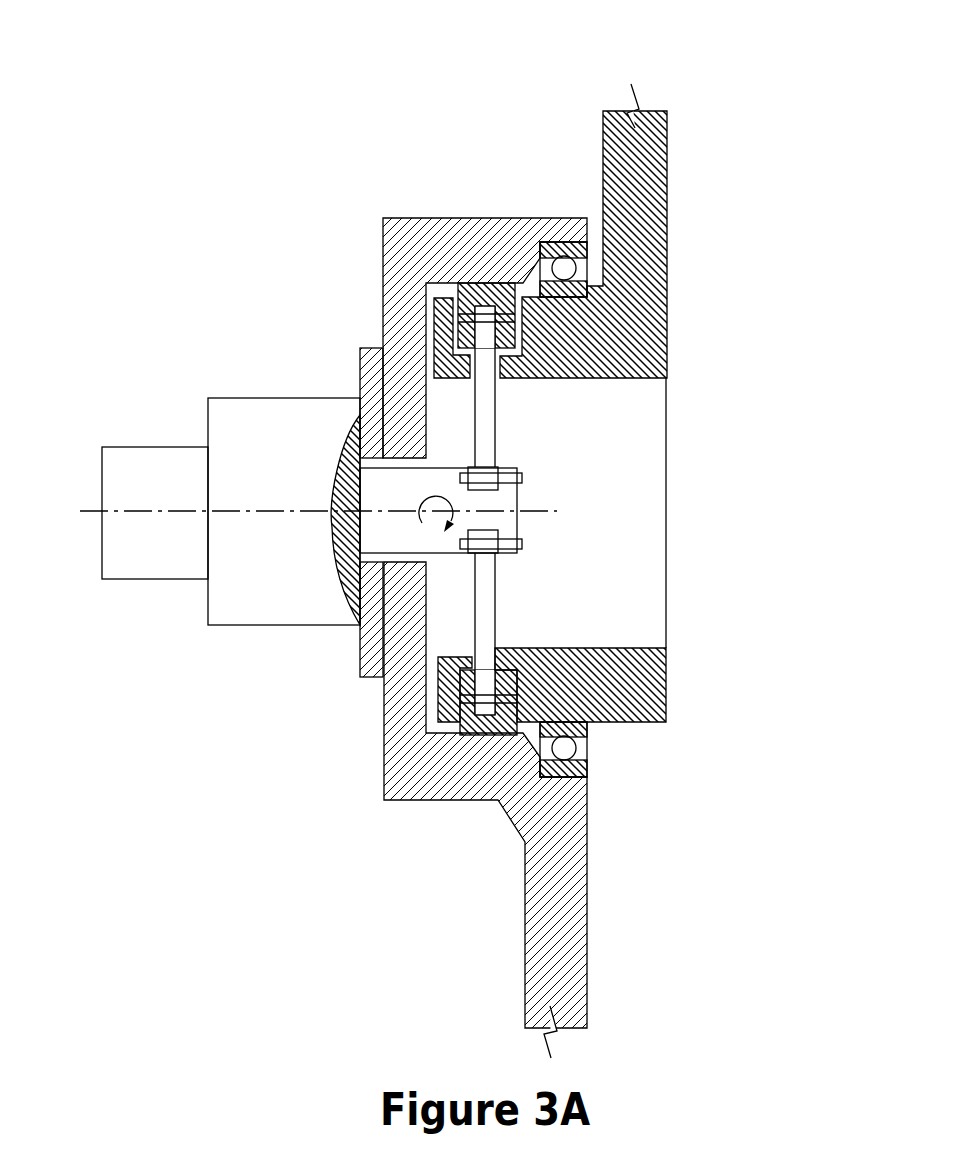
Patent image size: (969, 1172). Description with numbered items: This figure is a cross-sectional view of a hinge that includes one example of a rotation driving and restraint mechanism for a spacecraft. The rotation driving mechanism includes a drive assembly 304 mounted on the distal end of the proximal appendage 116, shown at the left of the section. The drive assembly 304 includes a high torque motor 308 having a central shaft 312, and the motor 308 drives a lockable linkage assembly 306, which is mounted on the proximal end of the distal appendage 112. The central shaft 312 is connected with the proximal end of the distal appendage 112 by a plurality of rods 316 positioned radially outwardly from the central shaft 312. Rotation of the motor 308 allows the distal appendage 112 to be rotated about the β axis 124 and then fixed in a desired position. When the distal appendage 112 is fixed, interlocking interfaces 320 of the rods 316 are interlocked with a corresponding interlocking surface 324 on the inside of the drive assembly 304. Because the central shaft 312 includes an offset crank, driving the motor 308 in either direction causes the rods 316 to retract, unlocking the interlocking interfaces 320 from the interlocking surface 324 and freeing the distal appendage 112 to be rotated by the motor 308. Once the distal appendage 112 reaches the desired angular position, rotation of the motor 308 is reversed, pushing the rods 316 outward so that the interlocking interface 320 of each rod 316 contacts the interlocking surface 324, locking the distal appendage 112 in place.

The distal appendage 112 is at (642, 111).
The proximal appendage 116 is at (558, 1020).
The β axis 124 is at (80, 511).
The drive assembly 304 is at (357, 675).
The lockable linkage assembly 306 is at (666, 693).
The high torque motor 308 is at (257, 442).
The central shaft 312 is at (517, 497).
The rods 316 is at (495, 413).
The interlocking interfaces 320 is at (510, 300).
The interlocking surface 324 is at (475, 283).